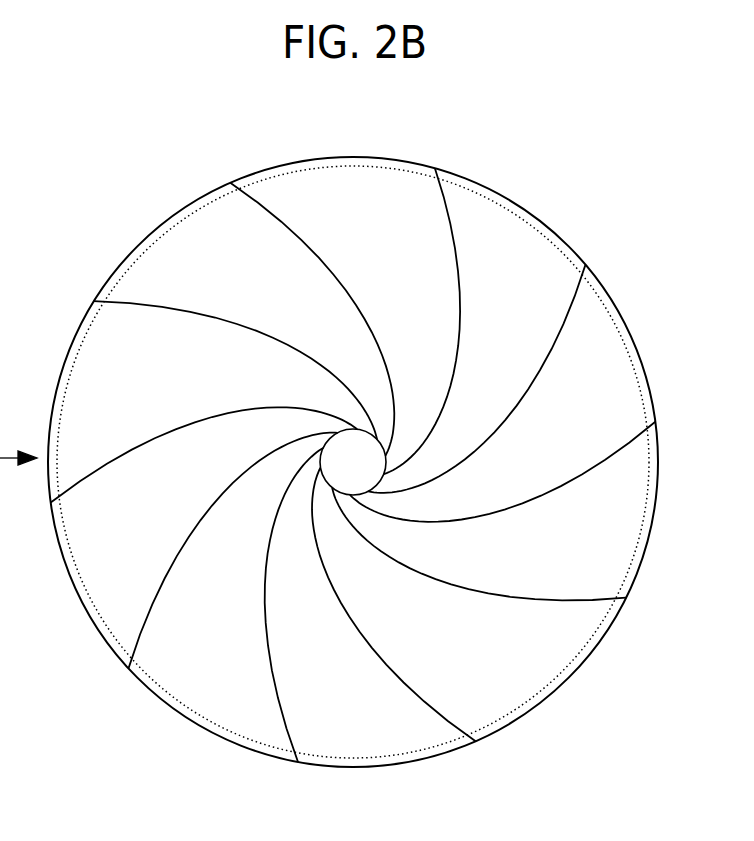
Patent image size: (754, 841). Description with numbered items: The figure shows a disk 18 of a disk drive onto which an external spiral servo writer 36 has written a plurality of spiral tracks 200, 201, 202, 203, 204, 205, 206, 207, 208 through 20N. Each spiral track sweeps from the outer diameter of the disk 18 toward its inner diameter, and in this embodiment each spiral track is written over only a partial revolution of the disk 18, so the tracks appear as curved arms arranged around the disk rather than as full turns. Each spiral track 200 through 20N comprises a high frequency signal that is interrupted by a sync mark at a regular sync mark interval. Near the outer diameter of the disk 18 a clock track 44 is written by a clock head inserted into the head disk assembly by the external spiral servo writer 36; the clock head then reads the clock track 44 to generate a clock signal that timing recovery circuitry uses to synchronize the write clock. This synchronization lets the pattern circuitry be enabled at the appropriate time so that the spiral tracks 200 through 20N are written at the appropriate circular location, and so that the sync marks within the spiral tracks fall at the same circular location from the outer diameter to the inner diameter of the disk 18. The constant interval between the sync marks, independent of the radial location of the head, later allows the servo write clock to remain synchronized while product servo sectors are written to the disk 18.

The disk 18 is at (547, 217).
The clock track 44 is at (638, 547).
The external spiral servo writer 36 is at (18, 312).
The spiral track 200 is at (452, 215).
The spiral track 201 is at (577, 300).
The spiral track 202 is at (627, 447).
The spiral track 203 is at (572, 603).
The spiral track 204 is at (437, 723).
The spiral track 205 is at (273, 717).
The spiral track 206 is at (140, 627).
The spiral track 207 is at (82, 483).
The spiral track 208 is at (115, 278).
The spiral track 20N is at (262, 200).